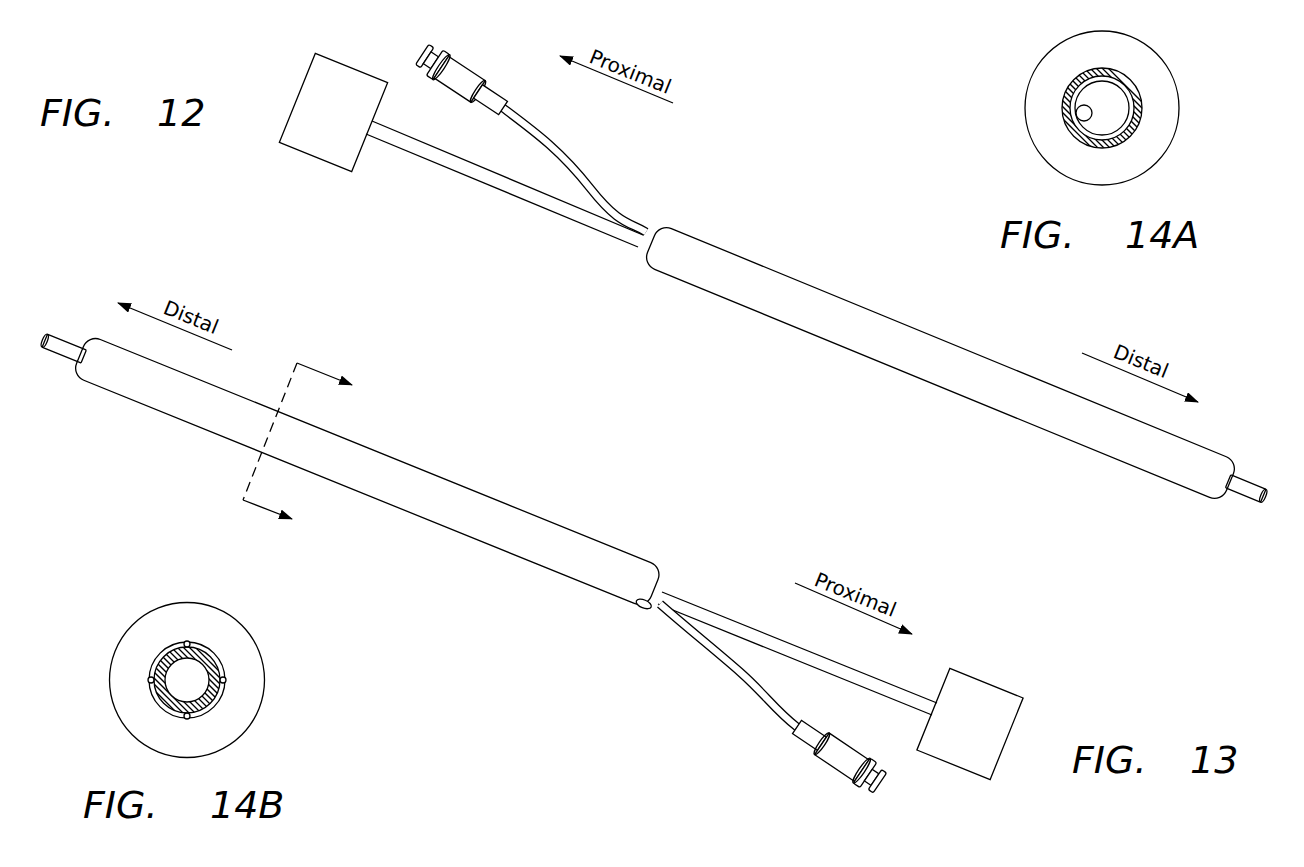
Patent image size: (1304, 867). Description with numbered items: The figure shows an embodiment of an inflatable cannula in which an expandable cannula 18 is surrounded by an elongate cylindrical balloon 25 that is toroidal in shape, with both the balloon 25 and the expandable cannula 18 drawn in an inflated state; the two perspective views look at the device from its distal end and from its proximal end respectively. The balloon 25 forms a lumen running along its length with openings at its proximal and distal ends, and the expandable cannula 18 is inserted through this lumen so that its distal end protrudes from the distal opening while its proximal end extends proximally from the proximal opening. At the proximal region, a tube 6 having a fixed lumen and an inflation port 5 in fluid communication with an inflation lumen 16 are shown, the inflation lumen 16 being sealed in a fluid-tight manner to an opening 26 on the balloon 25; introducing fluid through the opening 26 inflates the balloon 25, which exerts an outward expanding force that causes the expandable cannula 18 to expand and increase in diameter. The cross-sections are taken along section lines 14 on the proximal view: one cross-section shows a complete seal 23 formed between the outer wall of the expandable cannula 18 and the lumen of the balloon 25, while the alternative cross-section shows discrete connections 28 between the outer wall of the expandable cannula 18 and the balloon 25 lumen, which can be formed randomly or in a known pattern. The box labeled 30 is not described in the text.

In FIG. 12, the inflation port 5 is at (478, 68).
In FIG. 13, the inflation port 5 is at (820, 760).
In FIG. 12, the tube 6 is at (518, 198).
In FIG. 13, the tube 6 is at (713, 607).
In FIG. 13, the section lines 14— 14 is at (320, 455).
In FIG. 12, the inflation lumen 16 is at (572, 163).
In FIG. 13, the inflation lumen 16 is at (735, 678).
In FIG. 12, the expandable cannula 18 is at (1246, 485).
In FIG. 13, the expandable cannula 18 is at (63, 338).
In FIG. 14A, the expandable cannula 18 is at (1078, 114).
In FIG. 14A, the complete seal 23 is at (1142, 107).
In FIG. 12, the elongate cylindrical balloon 25 is at (884, 312).
In FIG. 13, the elongate cylindrical balloon 25 is at (480, 490).
In FIG. 14A, the elongate cylindrical balloon 25 is at (1046, 54).
In FIG. 13, the opening 26 is at (632, 609).
In FIG. 14B, the connections 28 is at (190, 642).
In FIG. 12, the cardiopulmonary bypass unit 30 is at (283, 145).
In FIG. 13, the cardiopulmonary bypass unit 30 is at (986, 682).